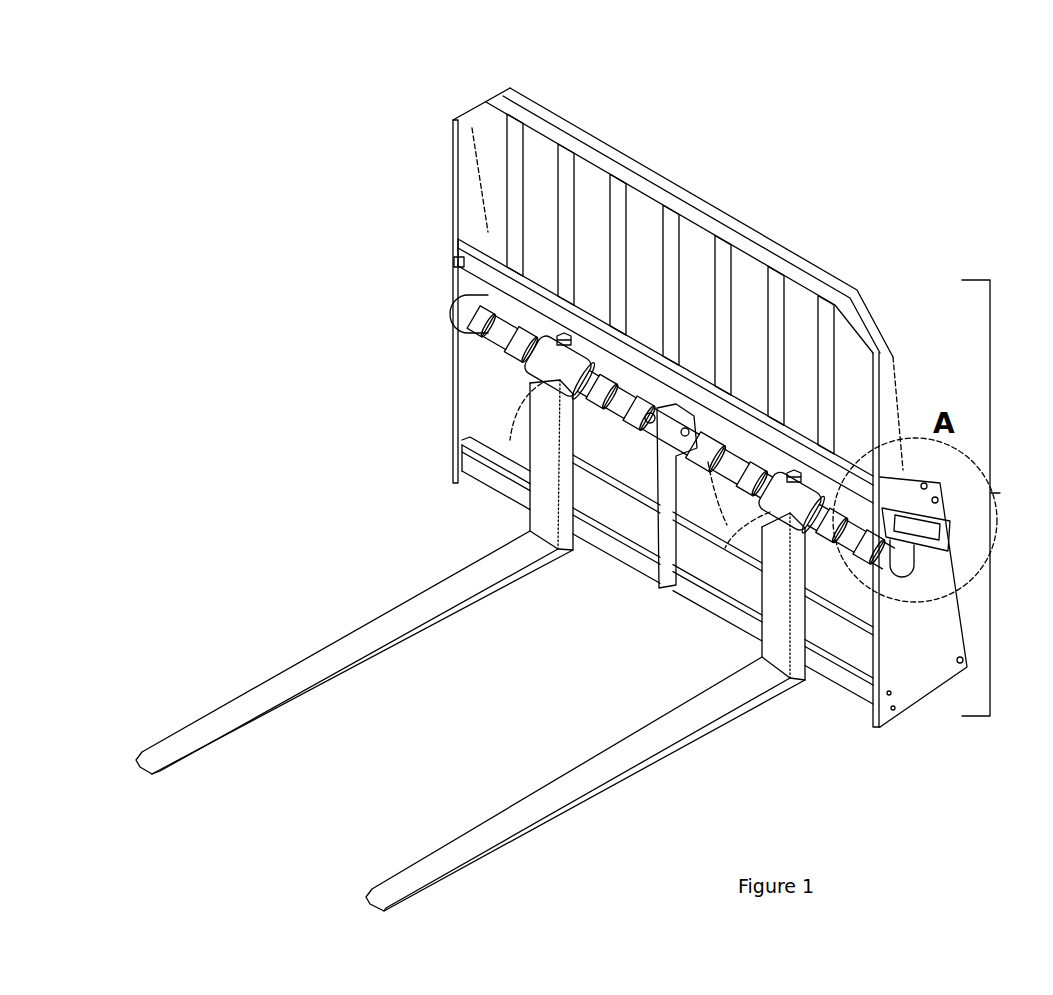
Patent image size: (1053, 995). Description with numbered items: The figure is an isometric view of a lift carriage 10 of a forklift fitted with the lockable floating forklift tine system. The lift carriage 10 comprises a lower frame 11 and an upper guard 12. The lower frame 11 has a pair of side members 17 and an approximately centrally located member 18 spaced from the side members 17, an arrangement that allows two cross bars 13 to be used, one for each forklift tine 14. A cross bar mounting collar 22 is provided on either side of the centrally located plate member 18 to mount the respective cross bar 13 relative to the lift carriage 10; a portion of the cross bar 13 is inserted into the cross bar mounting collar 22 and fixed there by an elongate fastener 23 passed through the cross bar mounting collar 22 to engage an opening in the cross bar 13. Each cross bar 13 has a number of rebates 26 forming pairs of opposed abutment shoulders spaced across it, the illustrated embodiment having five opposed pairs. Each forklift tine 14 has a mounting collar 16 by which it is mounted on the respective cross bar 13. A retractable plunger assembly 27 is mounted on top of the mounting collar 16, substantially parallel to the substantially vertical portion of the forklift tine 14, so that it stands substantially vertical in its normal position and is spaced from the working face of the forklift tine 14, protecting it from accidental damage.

The lift carriage 10 is at (1006, 498).
The lower frame 11 is at (906, 737).
The upper guard 12 is at (447, 162).
The cross bar 13 is at (530, 355).
The forklift tine 14 is at (392, 606).
The mounting collar 16 is at (552, 372).
The side member 17 is at (446, 465).
The centrally located member 18 is at (698, 533).
The cross bar mounting collar 22 is at (678, 438).
The elongate fastener 23 is at (643, 417).
The rebate 26 is at (452, 311).
The retractable plunger assembly 27 is at (552, 341).